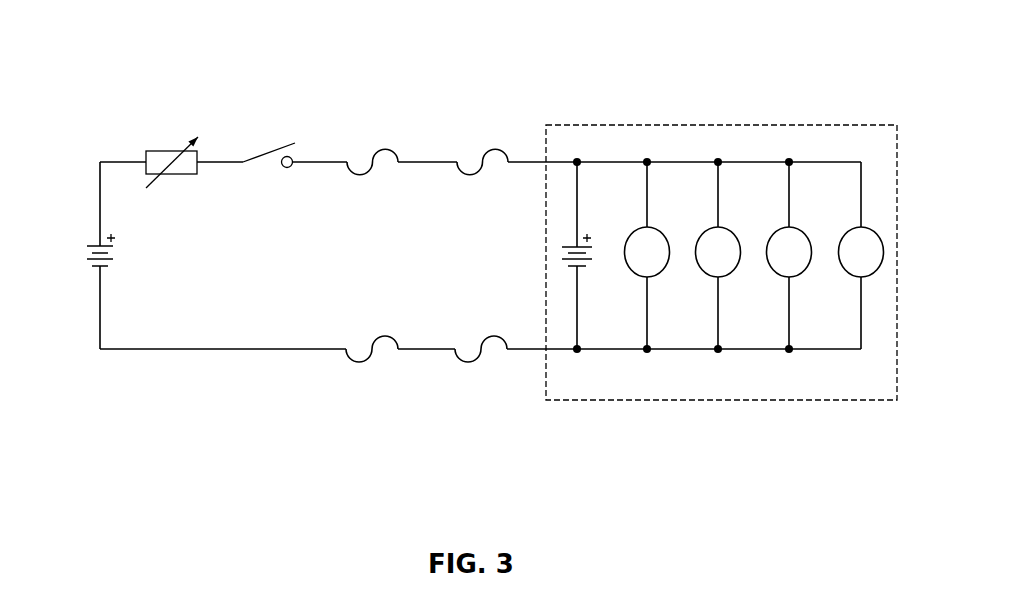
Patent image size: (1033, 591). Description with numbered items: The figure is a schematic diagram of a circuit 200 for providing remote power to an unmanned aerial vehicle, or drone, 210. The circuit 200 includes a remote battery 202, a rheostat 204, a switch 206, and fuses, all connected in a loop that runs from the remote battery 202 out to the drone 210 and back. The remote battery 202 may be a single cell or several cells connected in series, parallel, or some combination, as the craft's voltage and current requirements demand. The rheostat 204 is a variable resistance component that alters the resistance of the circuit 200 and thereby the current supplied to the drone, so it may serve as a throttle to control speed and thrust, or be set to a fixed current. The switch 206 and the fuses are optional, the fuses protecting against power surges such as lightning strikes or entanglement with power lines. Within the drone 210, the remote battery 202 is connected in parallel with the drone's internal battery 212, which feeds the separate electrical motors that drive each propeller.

The circuit 200 is at (399, 466).
The remote battery 202 is at (83, 254).
The rheostat 204 is at (166, 150).
The switch 206 is at (273, 145).
The unmanned aerial vehicle 210 is at (697, 125).
The internal battery 212 is at (595, 243).